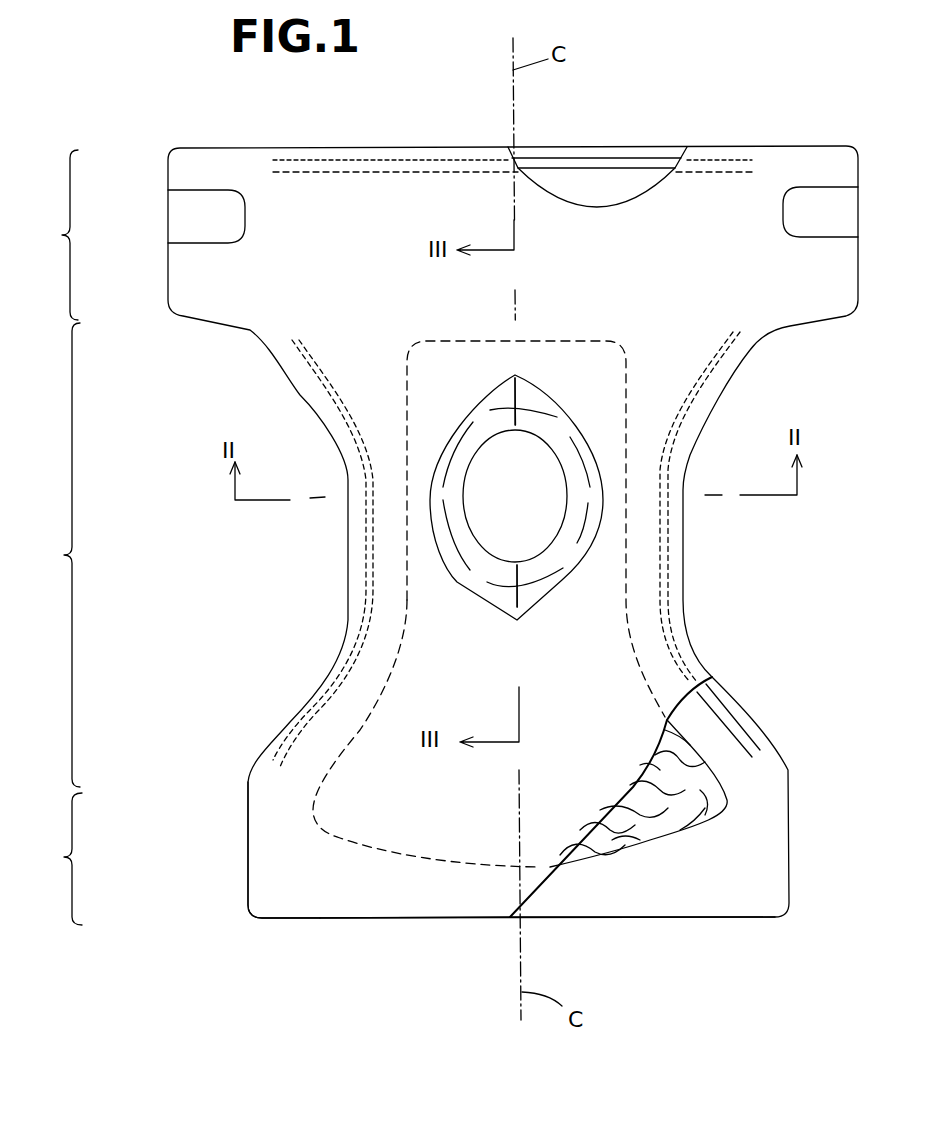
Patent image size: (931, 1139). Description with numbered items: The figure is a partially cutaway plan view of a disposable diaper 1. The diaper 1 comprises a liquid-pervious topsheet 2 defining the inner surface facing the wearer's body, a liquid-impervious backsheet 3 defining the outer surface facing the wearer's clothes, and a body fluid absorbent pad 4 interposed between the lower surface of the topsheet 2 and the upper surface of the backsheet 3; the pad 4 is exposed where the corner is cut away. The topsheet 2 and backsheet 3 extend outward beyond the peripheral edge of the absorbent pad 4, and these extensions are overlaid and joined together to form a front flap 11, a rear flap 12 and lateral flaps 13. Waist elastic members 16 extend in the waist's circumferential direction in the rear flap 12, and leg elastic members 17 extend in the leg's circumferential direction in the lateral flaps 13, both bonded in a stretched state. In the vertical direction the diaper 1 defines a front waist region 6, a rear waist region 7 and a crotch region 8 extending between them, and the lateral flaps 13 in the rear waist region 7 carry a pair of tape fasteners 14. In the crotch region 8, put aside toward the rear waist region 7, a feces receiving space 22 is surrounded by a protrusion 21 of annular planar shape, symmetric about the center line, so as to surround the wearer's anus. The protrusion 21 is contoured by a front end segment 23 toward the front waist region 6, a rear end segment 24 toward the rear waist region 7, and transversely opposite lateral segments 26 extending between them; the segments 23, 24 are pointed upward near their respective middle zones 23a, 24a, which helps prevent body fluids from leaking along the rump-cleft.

The disposable diaper 1 is at (749, 97).
The liquid-pervious topsheet 2 is at (272, 882).
The liquid-impervious backsheet 3 is at (587, 883).
The body fluid absorbent pad 4 is at (678, 826).
The front waist region 6 is at (60, 859).
The rear waist region 7 is at (55, 235).
The crotch region 8 is at (58, 555).
The front flap 11 is at (372, 882).
The rear flap 12 is at (410, 183).
The lateral flaps 13 is at (358, 398).
The tape fasteners 14 is at (183, 217).
The waist elastic members 16 is at (587, 168).
The leg elastic members 17 is at (723, 717).
The protrusion 21 is at (454, 588).
The feces receiving space 22 is at (535, 450).
The front end segment 23 is at (543, 593).
The middle zone of front end segment 23a is at (527, 590).
The rear end segment 24 is at (555, 407).
The middle zone of rear end segment 24a is at (517, 390).
The lateral segments 26 is at (435, 500).